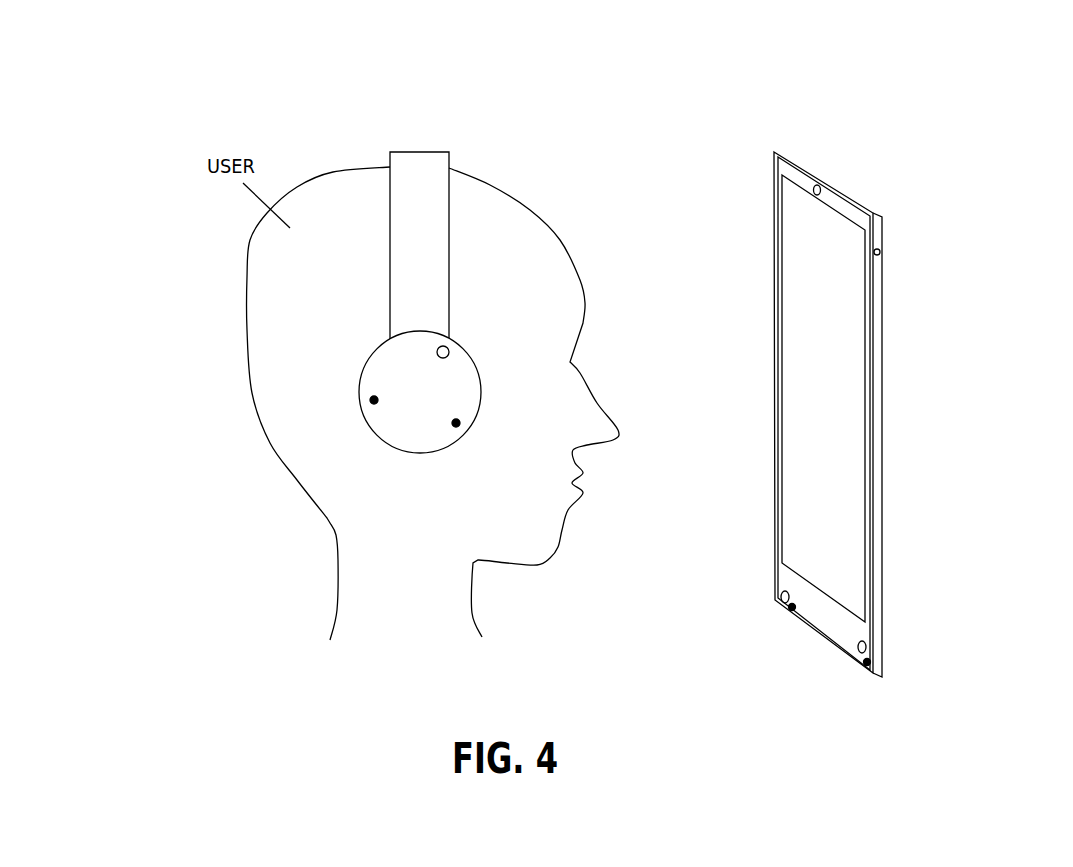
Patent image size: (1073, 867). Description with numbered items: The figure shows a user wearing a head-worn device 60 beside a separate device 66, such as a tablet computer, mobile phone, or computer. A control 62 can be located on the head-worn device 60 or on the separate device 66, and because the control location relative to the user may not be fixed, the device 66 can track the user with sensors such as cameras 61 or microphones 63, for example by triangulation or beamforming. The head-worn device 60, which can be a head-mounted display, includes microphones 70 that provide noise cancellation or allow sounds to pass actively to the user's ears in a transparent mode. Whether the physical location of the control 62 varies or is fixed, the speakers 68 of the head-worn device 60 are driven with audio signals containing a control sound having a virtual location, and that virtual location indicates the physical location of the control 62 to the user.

The head-worn device 60 is at (428, 152).
The camera 61 is at (812, 172).
The control 62 is at (448, 347).
The microphones 63 is at (866, 662).
The device 66 is at (882, 392).
The speakers 68 is at (365, 370).
The microphones 70 is at (374, 400).